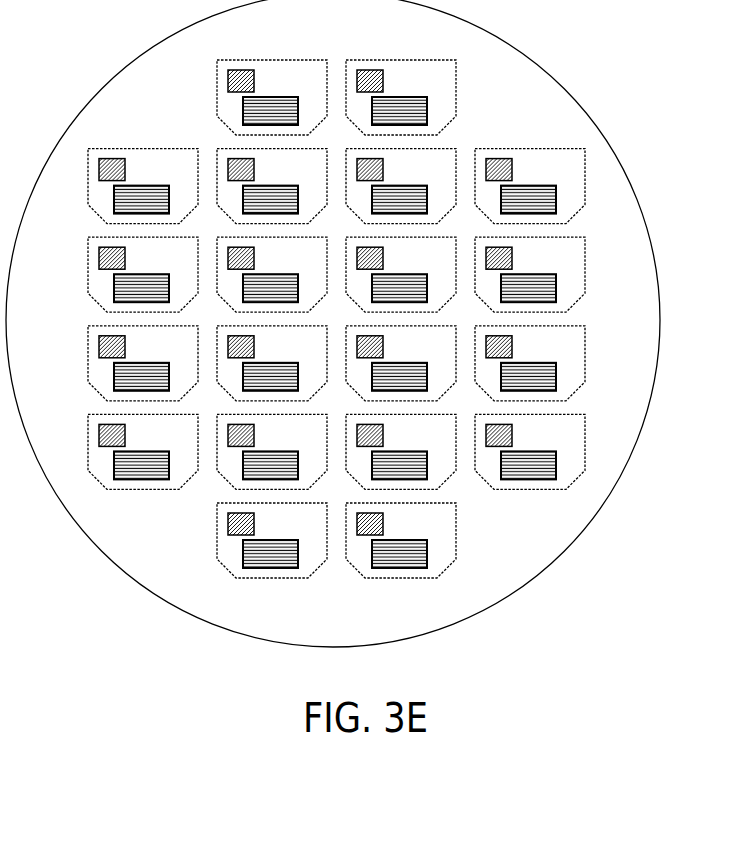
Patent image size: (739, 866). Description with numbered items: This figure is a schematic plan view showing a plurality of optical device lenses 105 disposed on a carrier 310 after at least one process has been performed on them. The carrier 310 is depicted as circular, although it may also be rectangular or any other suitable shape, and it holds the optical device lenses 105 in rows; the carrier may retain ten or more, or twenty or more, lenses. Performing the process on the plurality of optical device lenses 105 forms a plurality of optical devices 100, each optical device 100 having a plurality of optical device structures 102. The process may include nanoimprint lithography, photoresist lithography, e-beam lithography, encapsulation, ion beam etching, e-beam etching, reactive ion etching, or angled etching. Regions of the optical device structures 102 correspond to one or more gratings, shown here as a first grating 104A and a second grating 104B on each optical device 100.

The optical device 100 is at (332, 79).
The optical device structures 102 is at (335, 79).
The first grating 104A is at (233, 71).
The second grating 104B is at (267, 103).
The optical device lens 105 is at (223, 86).
The carrier 310 is at (557, 118).